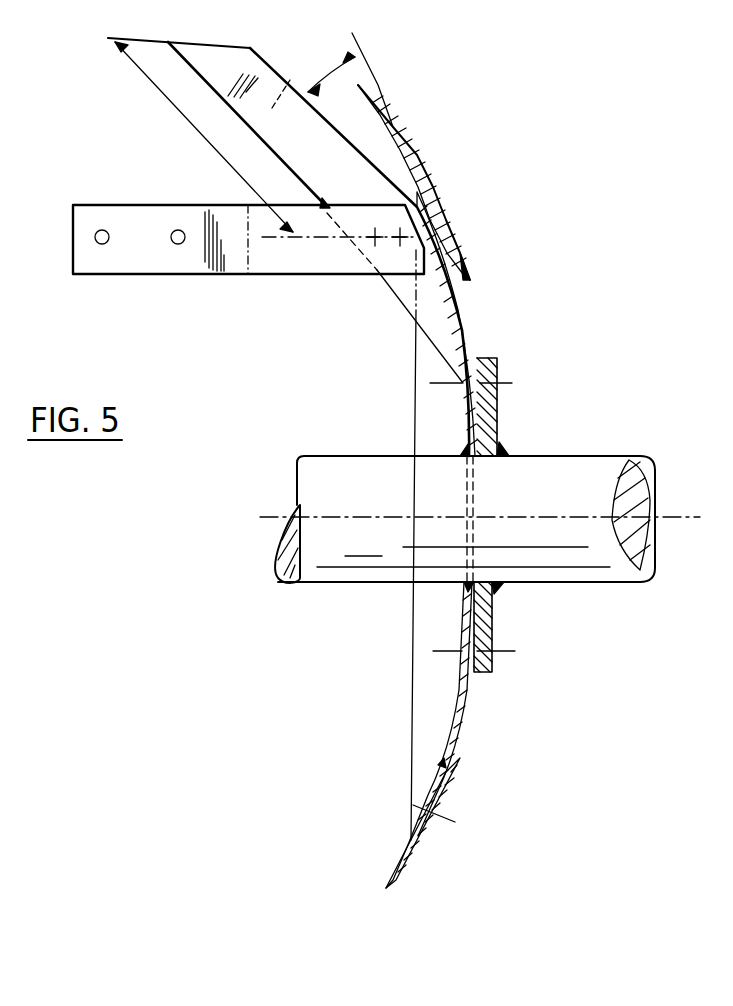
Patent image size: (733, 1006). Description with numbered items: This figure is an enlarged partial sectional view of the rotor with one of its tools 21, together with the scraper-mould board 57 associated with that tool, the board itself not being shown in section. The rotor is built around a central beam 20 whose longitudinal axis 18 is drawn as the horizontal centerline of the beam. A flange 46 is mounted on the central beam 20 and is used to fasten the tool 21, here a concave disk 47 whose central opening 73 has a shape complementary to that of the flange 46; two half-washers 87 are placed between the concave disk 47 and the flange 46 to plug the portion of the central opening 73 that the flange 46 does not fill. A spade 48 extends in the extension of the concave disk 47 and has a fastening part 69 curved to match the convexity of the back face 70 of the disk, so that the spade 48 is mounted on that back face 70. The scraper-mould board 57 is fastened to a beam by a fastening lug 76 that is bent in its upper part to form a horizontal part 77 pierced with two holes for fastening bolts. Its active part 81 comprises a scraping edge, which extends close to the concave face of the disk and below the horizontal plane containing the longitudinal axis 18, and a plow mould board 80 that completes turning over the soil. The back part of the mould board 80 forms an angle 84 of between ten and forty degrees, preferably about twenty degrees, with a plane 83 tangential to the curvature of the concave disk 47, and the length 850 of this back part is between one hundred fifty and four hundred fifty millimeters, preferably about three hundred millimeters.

The longitudinal axis 18 is at (300, 505).
The central beam 20 is at (480, 519).
The tool 21 is at (438, 765).
The flange 46 is at (495, 435).
The concave disk 47 is at (432, 690).
The spade 48 is at (400, 865).
The scraper-mould board 57 is at (322, 200).
The fastening part 69 is at (447, 793).
The back face 70 is at (460, 736).
The central opening 73 is at (465, 608).
The fastening lug 76 is at (288, 268).
The horizontal part 77 is at (141, 268).
The mould board 80 is at (288, 82).
The active part 81 is at (404, 318).
The plane 83 is at (362, 58).
The angle 84 is at (328, 80).
The half-washer 87 is at (478, 350).
The length 850 is at (187, 118).